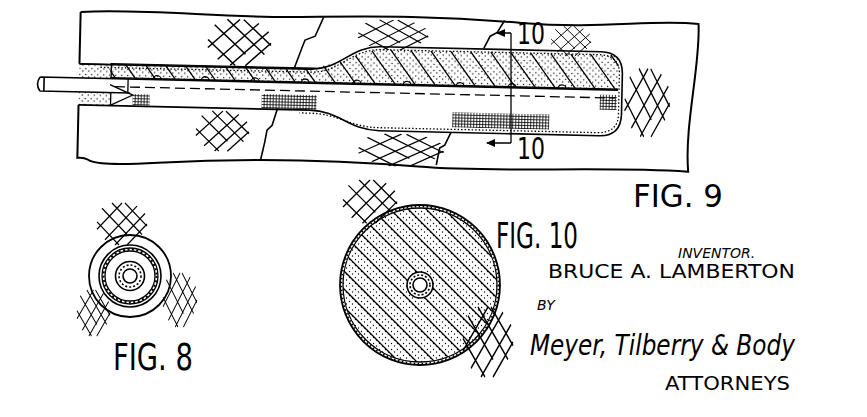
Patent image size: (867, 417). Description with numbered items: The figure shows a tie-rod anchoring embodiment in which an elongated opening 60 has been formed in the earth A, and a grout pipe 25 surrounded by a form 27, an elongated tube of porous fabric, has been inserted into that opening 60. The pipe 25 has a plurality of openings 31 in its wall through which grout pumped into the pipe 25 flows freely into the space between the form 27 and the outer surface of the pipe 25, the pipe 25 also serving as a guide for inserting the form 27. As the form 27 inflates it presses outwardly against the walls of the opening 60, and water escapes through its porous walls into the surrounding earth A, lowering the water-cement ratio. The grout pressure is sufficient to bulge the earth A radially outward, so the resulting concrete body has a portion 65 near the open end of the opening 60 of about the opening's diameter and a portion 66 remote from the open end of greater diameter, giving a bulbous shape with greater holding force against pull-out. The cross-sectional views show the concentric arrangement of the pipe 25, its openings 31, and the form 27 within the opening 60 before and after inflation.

In FIG. 9, the earth A is at (78, 22).
In FIG. 8, the earth A is at (97, 229).
In FIG. 10, the earth A is at (353, 204).
In FIG. 9, the pipe 25 is at (58, 91).
In FIG. 8, the pipe 25 is at (140, 268).
In FIG. 10, the pipe 25 is at (410, 273).
In FIG. 9, the form 27 is at (357, 88).
In FIG. 8, the form 27 is at (102, 272).
In FIG. 10, the form 27 is at (362, 231).
In FIG. 8, the openings 31 is at (143, 278).
In FIG. 10, the openings 31 is at (414, 286).
In FIG. 9, the opening 60 is at (79, 70).
In FIG. 8, the opening 60 is at (90, 278).
In FIG. 9, the portion 65 is at (180, 106).
In FIG. 9, the portion 66 is at (556, 126).
In FIG. 10, the portion 66 is at (356, 322).